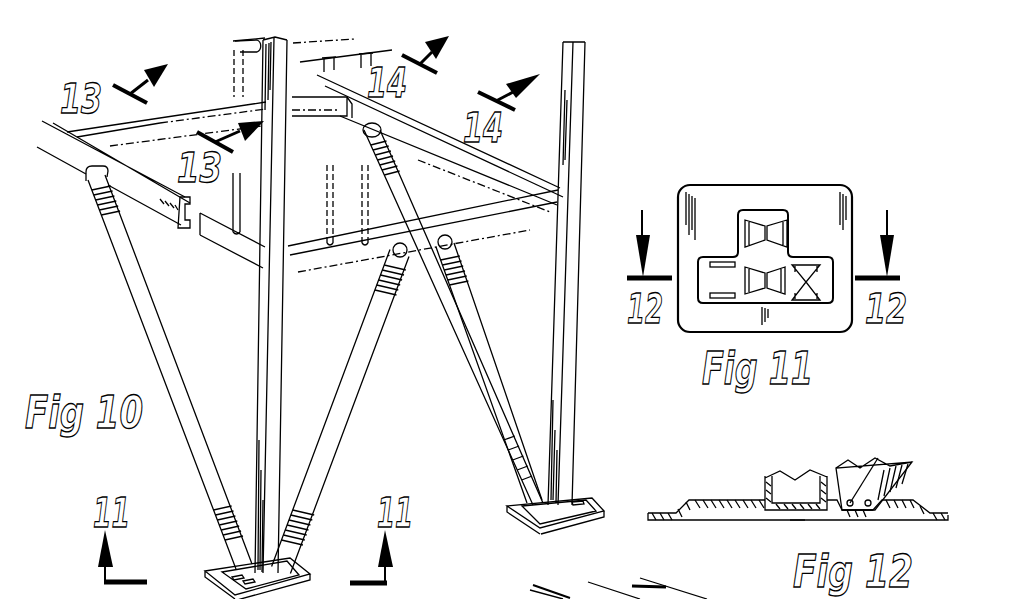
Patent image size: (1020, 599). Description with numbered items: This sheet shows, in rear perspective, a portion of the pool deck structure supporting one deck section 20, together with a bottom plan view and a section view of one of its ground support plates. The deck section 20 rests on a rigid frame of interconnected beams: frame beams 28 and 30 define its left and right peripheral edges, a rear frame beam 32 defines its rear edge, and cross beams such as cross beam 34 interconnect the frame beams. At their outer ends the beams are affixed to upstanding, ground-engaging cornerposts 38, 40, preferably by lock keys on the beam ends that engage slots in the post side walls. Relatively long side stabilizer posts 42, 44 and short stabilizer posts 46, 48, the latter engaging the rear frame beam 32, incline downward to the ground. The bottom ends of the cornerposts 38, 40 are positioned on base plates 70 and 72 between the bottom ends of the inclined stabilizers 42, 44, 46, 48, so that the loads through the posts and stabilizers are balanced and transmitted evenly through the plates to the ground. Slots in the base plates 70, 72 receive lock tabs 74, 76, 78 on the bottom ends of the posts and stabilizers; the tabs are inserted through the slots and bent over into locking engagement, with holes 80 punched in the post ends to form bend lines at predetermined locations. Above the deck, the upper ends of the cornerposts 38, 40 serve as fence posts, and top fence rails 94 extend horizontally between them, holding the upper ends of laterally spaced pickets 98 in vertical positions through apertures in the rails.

In FIG. 10, the deck section 20 is at (329, 279).
In FIG. 10, the frame beam 28 is at (217, 258).
In FIG. 10, the frame beam 30 is at (431, 121).
In FIG. 10, the rear frame beam 32 is at (510, 236).
In FIG. 10, the cross beam 34 is at (166, 118).
In FIG. 10, the cornerpost 38 is at (258, 393).
In FIG. 12, the cornerpost 38 is at (765, 480).
In FIG. 10, the cornerpost 40 is at (586, 112).
In FIG. 10, the side stabilizer post 42 is at (153, 342).
In FIG. 10, the side stabilizer post 44 is at (363, 135).
In FIG. 10, the short stabilizer post 46 is at (332, 450).
In FIG. 12, the short stabilizer post 46 is at (842, 467).
In FIG. 10, the short stabilizer post 48 is at (480, 315).
In FIG. 10, the base plate 70 is at (307, 572).
In FIG. 11, the base plate 70 is at (833, 187).
In FIG. 12, the base plate 70 is at (687, 500).
In FIG. 10, the base plate 72 is at (519, 500).
In FIG. 11, the lock tab 74 is at (772, 227).
In FIG. 11, the lock tab 76 is at (820, 278).
In FIG. 12, the lock tab 76 is at (867, 517).
In FIG. 11, the lock tab 78 is at (775, 290).
In FIG. 12, the lock tab 78 is at (797, 522).
In FIG. 12, the hole 80 is at (873, 466).
In FIG. 10, the top fence rail 94 is at (233, 48).
In FIG. 10, the picket 98 is at (232, 77).